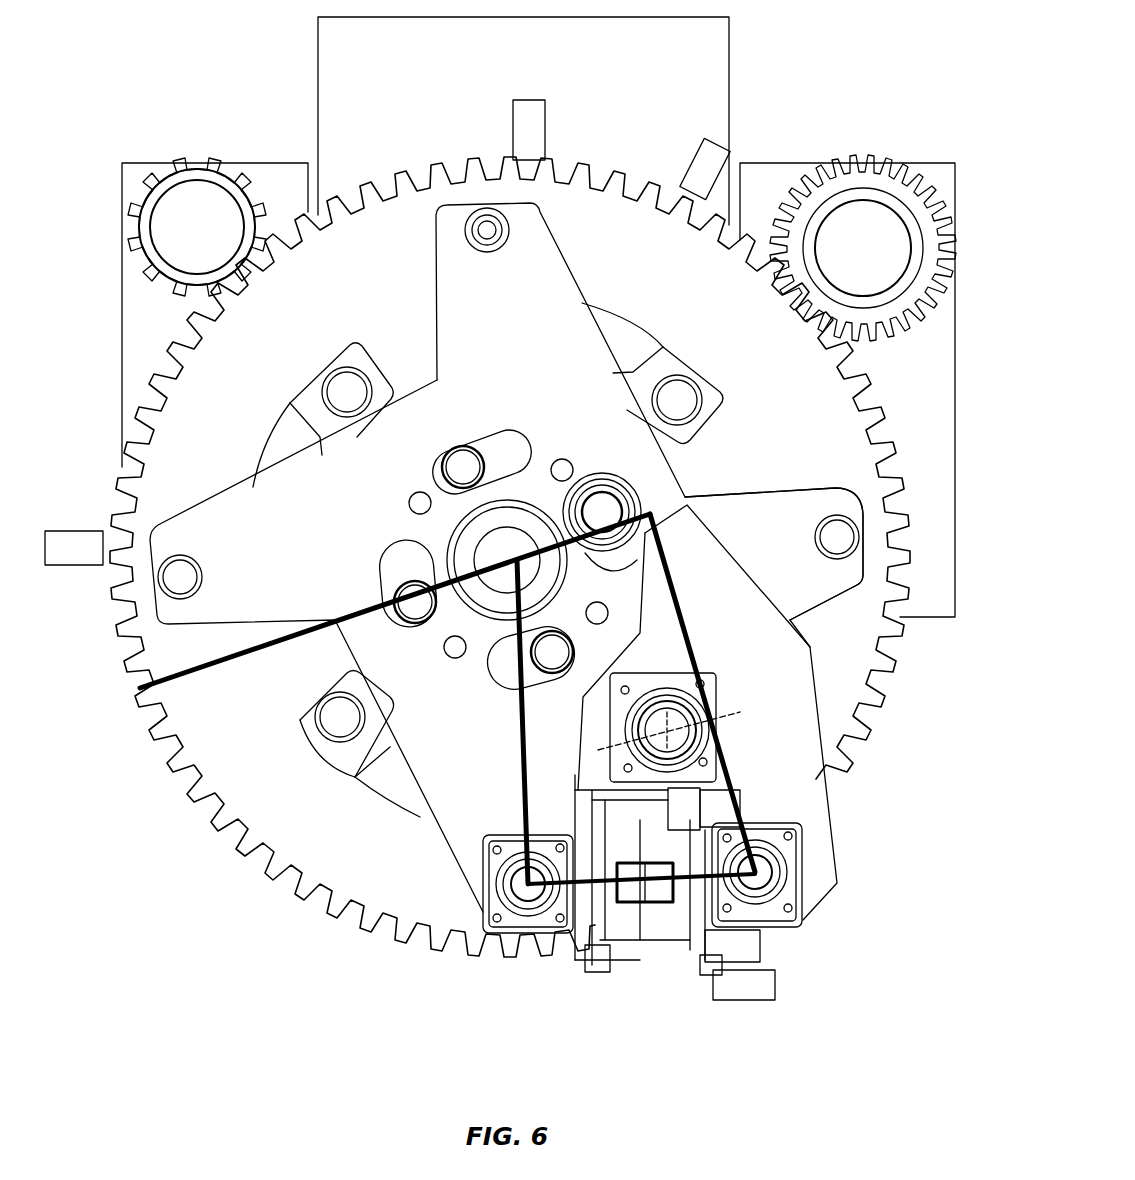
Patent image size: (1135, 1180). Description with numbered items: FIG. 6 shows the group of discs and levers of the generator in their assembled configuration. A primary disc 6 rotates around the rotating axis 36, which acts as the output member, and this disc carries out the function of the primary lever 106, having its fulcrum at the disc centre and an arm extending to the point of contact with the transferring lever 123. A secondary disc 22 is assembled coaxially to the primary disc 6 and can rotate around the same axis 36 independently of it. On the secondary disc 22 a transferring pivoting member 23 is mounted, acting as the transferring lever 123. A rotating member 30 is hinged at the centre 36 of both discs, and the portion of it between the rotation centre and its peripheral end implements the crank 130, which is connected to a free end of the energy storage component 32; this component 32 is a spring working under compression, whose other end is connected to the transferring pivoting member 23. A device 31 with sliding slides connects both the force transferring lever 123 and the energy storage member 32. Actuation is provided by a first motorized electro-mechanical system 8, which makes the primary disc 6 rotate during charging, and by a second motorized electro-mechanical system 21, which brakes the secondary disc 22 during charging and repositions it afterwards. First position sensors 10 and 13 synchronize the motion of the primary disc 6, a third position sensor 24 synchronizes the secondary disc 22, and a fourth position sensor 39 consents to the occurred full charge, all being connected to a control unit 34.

The primary disc 6 is at (510, 561).
The first motorized electro-mechanical system 8 is at (932, 163).
The first position sensor 10 is at (546, 118).
The first position sensor 13 is at (725, 152).
The second motorized electro-mechanical system 21 is at (160, 165).
The secondary disc 22 is at (305, 908).
The transferring pivoting member 23 is at (828, 805).
The third position sensor 24 is at (72, 531).
The rotating member 30 is at (742, 490).
The device with sliding slides 31 is at (548, 935).
The energy storage component 32 is at (629, 930).
The control unit 34 is at (730, 55).
The rotating axis 36 is at (506, 561).
The fourth position sensor 39 is at (775, 988).
The primary lever 106 is at (342, 603).
The transferring lever 123 is at (695, 638).
The crank 130 is at (510, 729).